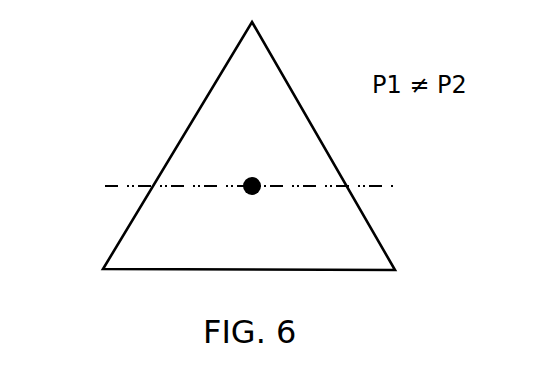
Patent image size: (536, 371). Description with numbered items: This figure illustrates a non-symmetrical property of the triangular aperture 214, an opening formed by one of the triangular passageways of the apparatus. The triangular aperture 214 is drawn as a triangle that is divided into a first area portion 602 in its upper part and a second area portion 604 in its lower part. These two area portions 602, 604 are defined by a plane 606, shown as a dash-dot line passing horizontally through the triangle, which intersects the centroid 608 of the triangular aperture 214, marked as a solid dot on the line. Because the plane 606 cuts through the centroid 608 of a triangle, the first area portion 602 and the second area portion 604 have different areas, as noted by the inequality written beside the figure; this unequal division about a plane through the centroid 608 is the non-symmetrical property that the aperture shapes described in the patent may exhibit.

The triangular aperture 214 is at (178, 145).
The first area portion P1 602 is at (247, 65).
The second area portion P2 604 is at (140, 252).
The plane 606 is at (363, 186).
The centroid 608 is at (261, 189).